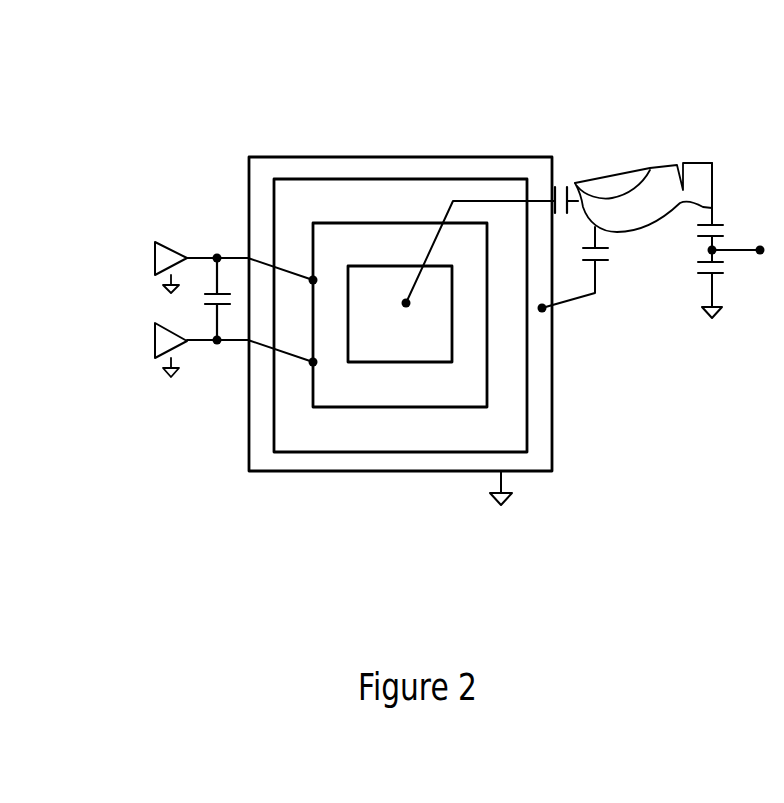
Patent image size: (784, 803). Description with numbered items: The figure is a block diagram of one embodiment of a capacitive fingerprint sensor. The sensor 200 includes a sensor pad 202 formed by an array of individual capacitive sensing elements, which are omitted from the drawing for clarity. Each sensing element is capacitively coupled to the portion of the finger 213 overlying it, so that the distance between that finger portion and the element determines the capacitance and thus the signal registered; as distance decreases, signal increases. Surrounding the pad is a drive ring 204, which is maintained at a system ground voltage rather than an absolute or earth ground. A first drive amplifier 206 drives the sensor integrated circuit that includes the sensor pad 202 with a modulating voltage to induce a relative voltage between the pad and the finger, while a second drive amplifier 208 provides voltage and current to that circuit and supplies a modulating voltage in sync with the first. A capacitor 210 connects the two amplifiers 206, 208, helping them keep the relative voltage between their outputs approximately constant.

The sensor 200 is at (490, 481).
The sensor pad 202 is at (368, 280).
The drive ring 204 is at (528, 163).
The first drive amplifier 206 is at (174, 254).
The second drive amplifier 208 is at (160, 341).
The capacitor 210 is at (205, 296).
The finger 213 is at (698, 168).